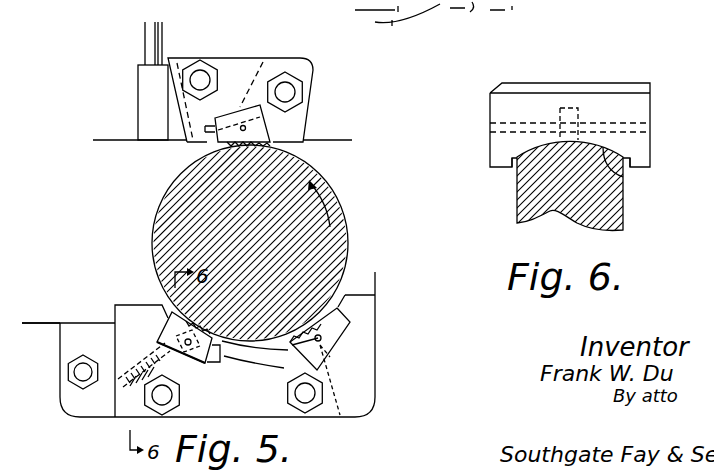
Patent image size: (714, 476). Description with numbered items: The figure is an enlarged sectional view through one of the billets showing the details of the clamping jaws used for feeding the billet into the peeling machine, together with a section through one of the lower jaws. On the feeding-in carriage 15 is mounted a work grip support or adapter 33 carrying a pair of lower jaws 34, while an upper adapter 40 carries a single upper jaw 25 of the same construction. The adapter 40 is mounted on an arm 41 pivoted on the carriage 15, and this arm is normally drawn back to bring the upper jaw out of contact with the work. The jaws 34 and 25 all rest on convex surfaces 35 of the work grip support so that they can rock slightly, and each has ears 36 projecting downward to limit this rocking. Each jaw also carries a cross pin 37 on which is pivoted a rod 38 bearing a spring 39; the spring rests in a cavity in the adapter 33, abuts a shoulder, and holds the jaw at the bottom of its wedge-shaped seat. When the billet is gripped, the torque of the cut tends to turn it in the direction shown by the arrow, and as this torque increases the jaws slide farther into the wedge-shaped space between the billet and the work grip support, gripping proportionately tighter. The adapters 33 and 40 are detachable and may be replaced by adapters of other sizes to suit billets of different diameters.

In FIG. 5, the carriage 15 is at (37, 336).
In FIG. 5, the upper jaw 25 is at (260, 128).
In FIG. 5, the work grip support or adapter 33 is at (271, 409).
In FIG. 6, the work grip support or adapter 33 is at (615, 215).
In FIG. 5, the lower jaws 34 is at (167, 320).
In FIG. 6, the lower jaws 34 is at (638, 107).
In FIG. 6, the convex surfaces 35 is at (623, 177).
In FIG. 5, the ears 36 is at (334, 342).
In FIG. 6, the ears 36 is at (643, 160).
In FIG. 5, the cross pin 37 is at (290, 347).
In FIG. 6, the cross pin 37 is at (502, 127).
In FIG. 5, the rod 38 is at (184, 363).
In FIG. 5, the spring 39 is at (146, 354).
In FIG. 5, the upper adapter 40 is at (237, 67).
In FIG. 5, the arm 41 is at (118, 133).